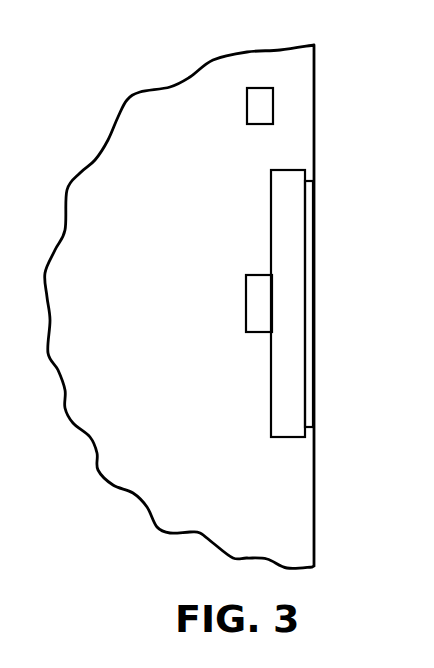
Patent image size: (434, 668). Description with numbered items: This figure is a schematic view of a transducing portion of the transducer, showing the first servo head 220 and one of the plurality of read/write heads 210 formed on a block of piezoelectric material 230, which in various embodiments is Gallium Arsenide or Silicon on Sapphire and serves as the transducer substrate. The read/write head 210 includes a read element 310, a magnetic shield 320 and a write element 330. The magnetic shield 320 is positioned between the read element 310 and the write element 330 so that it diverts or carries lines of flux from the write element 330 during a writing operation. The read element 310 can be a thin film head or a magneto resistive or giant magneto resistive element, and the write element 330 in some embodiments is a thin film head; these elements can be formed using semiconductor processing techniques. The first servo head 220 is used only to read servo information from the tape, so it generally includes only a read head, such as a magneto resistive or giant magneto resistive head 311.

The piezoelectric material 230 is at (118, 155).
The first servo head 220 is at (273, 108).
The read/write head 210 is at (290, 170).
The giant magneto resistive head 311 is at (247, 107).
The magnetic shield 320 is at (271, 219).
The write element 330 is at (314, 286).
The read element 310 is at (247, 303).